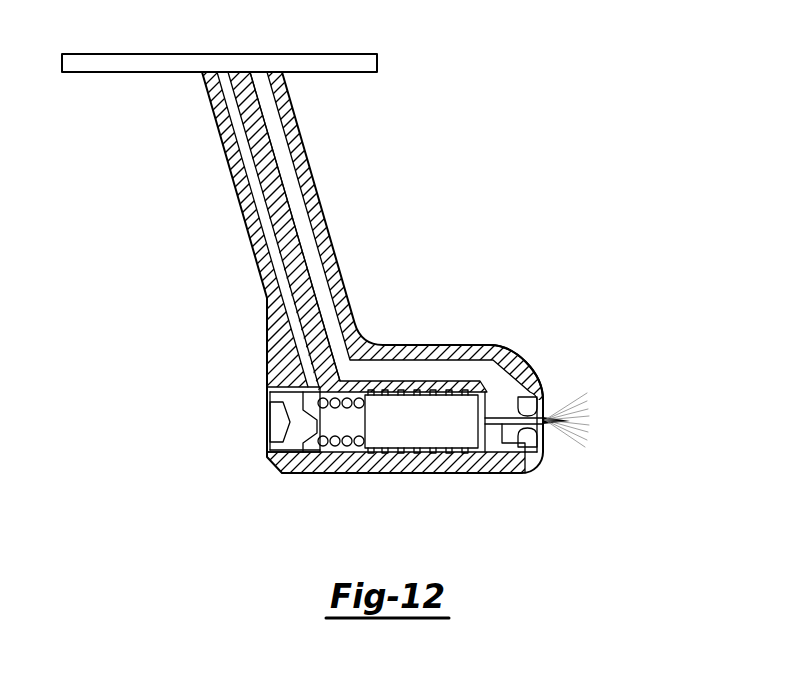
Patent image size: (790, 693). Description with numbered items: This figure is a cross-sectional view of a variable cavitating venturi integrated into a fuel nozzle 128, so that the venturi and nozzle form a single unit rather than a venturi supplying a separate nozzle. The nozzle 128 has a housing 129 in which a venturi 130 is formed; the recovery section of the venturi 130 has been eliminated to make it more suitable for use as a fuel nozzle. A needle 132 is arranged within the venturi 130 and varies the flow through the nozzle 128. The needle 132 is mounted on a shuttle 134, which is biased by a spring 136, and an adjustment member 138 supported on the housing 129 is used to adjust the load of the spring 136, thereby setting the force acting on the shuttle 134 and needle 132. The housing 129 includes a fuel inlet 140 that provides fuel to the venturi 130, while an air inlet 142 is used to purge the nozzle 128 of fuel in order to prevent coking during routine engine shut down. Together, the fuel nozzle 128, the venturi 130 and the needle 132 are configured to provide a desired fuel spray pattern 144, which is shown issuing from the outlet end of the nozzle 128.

The fuel nozzle 128 is at (438, 302).
The housing 129 is at (510, 366).
The venturi 130 is at (537, 404).
The needle 132 is at (500, 443).
The shuttle 134 is at (410, 448).
The spring 136 is at (336, 447).
The adjustment member 138 is at (300, 413).
The fuel inlet 140 is at (260, 192).
The air inlet 142 is at (280, 163).
The fuel spray pattern 144 is at (588, 426).